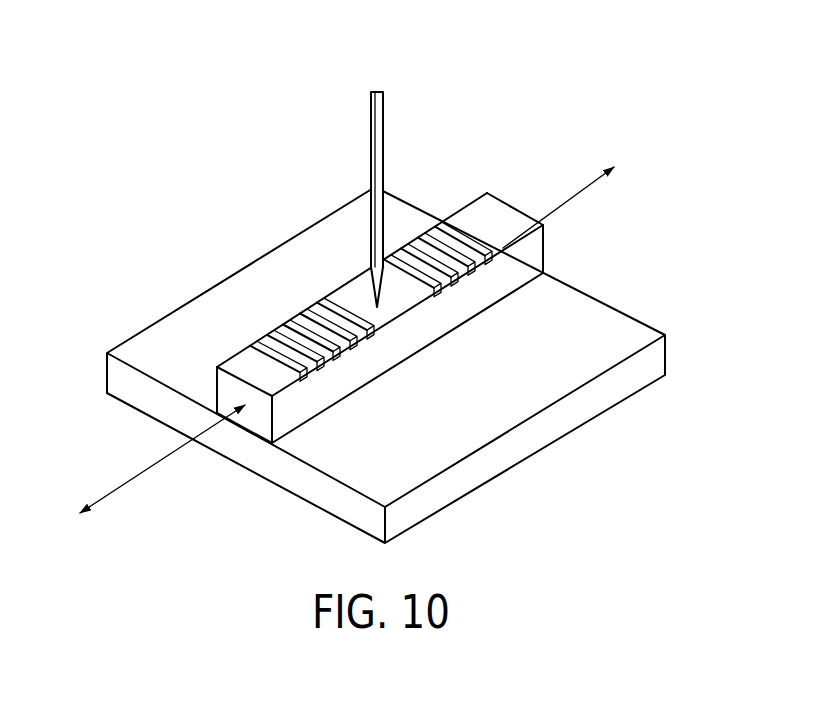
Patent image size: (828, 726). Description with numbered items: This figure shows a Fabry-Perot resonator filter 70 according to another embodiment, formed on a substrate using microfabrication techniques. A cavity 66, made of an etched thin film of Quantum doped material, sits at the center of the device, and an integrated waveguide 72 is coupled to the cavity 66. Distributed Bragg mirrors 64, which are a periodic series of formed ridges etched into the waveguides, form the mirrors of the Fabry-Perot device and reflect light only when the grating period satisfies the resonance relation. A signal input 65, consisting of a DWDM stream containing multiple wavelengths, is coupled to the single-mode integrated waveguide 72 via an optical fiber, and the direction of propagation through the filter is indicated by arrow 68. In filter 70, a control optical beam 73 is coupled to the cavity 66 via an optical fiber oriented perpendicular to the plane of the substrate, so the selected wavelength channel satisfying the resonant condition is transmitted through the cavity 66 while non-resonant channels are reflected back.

The Fabry-Perot resonator filter 70 is at (550, 66).
The control optical beam 73 is at (383, 125).
The rail end block / direction arrow 68 is at (563, 203).
The cavity 66 is at (346, 292).
The single-mode integrated waveguide 72 is at (243, 364).
The distributed Bragg mirrors 64 is at (363, 370).
The signal input 65 is at (213, 426).